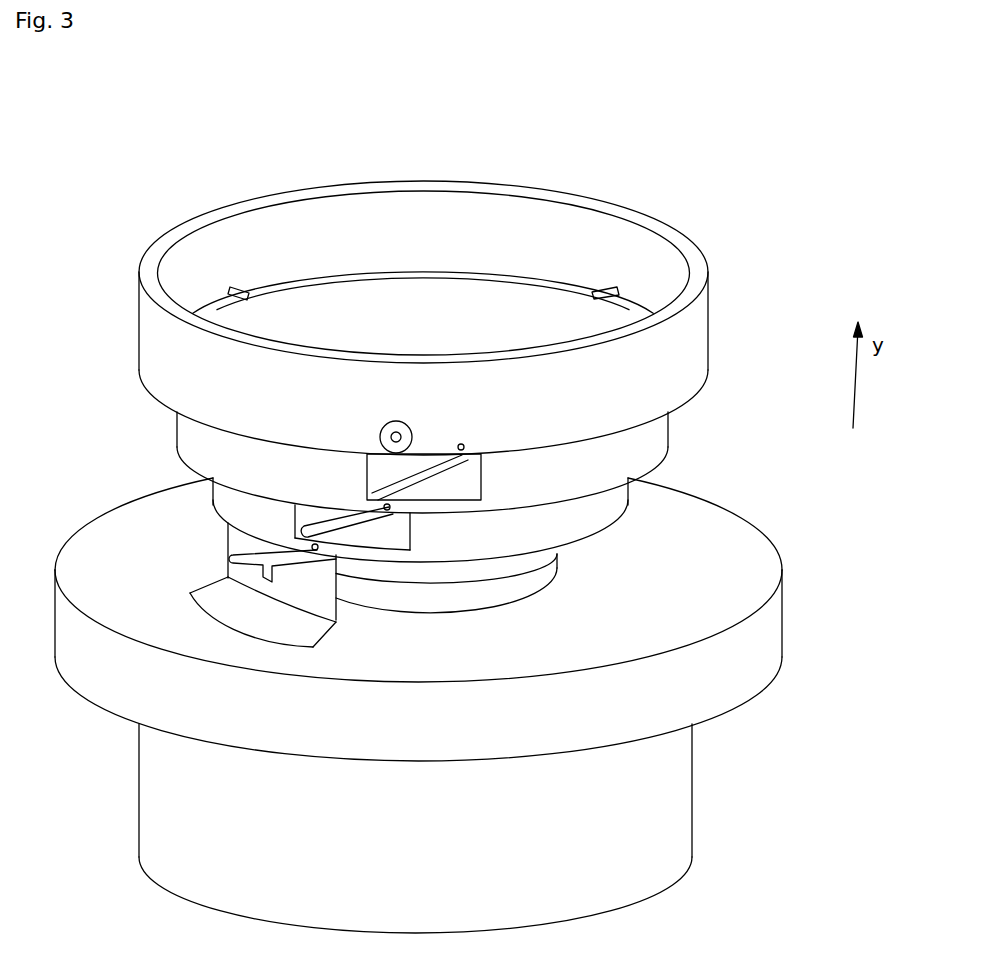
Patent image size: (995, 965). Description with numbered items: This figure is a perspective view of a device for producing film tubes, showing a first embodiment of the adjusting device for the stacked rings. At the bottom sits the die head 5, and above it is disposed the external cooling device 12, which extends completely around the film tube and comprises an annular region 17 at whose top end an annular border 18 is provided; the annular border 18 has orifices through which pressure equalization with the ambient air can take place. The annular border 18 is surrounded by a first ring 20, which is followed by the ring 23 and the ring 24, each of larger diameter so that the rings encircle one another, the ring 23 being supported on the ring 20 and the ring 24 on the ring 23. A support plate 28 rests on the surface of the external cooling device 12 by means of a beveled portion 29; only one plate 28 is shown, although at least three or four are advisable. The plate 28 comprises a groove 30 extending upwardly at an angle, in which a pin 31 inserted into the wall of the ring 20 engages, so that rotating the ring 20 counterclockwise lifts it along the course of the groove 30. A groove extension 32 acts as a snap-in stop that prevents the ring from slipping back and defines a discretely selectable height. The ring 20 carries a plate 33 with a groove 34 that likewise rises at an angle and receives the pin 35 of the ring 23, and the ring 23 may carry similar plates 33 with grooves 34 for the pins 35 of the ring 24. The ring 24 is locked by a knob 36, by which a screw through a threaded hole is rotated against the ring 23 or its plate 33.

The die head 5 is at (657, 821).
The external cooling device 12 is at (727, 687).
The annular region 17 is at (527, 585).
The annular border 18 is at (540, 558).
The first ring 20 is at (605, 507).
The ring 23 is at (642, 446).
The ring 24 is at (688, 355).
The support plate 28 is at (340, 607).
The beveled portion 29 is at (308, 630).
The groove 30 is at (235, 557).
The pin 31 is at (318, 552).
The groove extension 32 is at (268, 580).
The plate 33 is at (410, 533).
The groove 34 is at (323, 537).
The pin 35 is at (247, 288).
The knob 36 is at (405, 433).